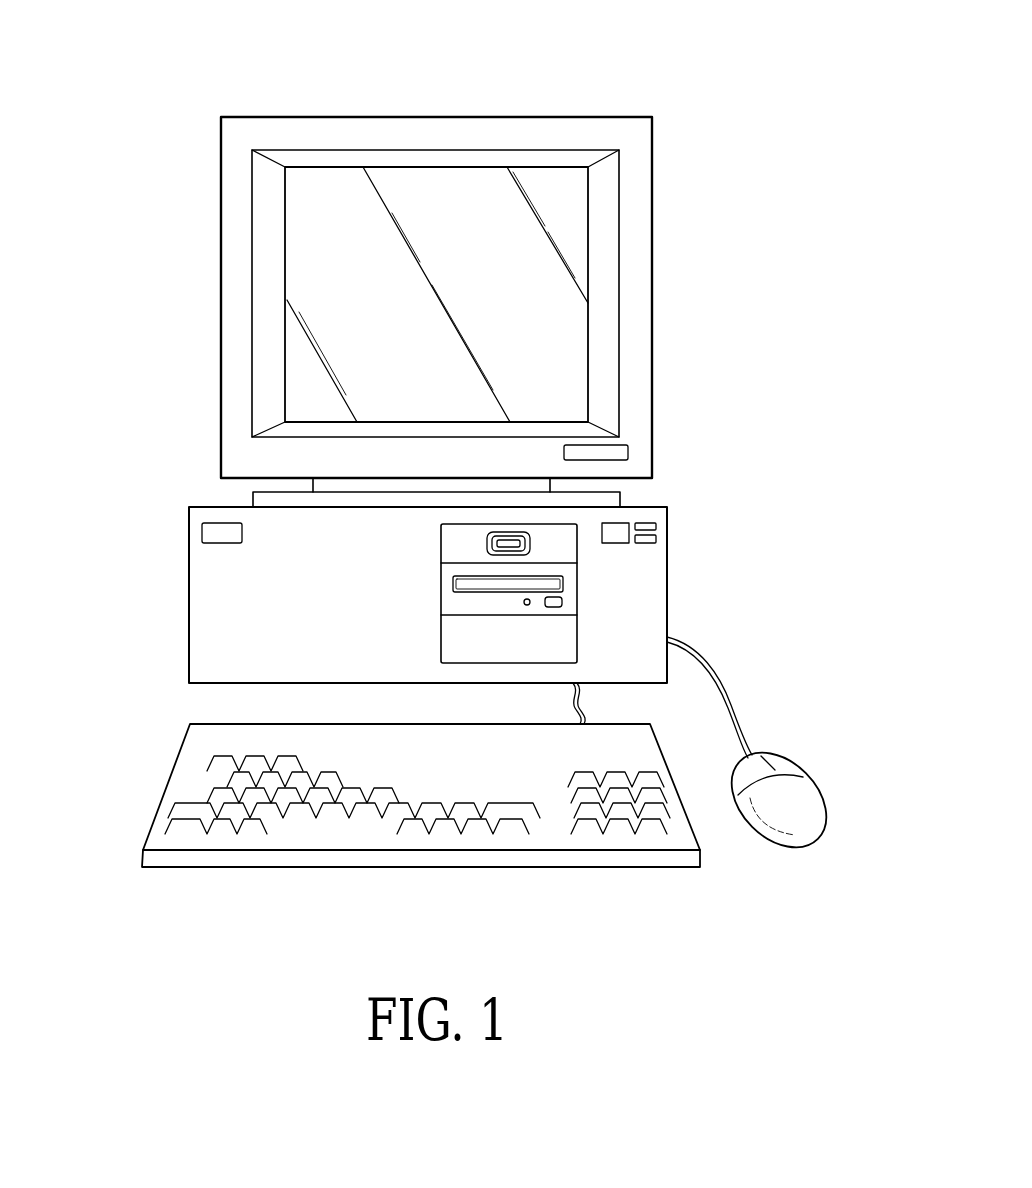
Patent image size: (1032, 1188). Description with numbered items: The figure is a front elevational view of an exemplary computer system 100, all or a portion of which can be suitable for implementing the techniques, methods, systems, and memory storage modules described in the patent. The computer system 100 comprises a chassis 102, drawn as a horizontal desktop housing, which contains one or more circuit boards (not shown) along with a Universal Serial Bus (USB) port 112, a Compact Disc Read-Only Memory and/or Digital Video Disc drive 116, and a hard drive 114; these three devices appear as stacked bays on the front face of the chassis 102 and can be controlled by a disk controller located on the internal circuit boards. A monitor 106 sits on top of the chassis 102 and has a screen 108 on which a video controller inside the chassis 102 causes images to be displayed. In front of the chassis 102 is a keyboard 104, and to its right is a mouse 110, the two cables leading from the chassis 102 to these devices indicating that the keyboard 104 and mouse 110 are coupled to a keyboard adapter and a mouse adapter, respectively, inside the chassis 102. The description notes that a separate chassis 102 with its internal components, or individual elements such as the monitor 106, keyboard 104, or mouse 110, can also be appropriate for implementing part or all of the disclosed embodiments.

The computer system 100 is at (642, 90).
The chassis 102 is at (189, 597).
The keyboard 104 is at (168, 780).
The monitor 106 is at (308, 117).
The screen 108 is at (343, 300).
The mouse 110 is at (803, 788).
The Universal Serial Bus (USB) port 112 is at (533, 540).
The hard drive 114 is at (566, 636).
The Compact Disc Read-Only Memory (CD-ROM) and/or Digital Video Disc (DVD) drive 116 is at (577, 592).